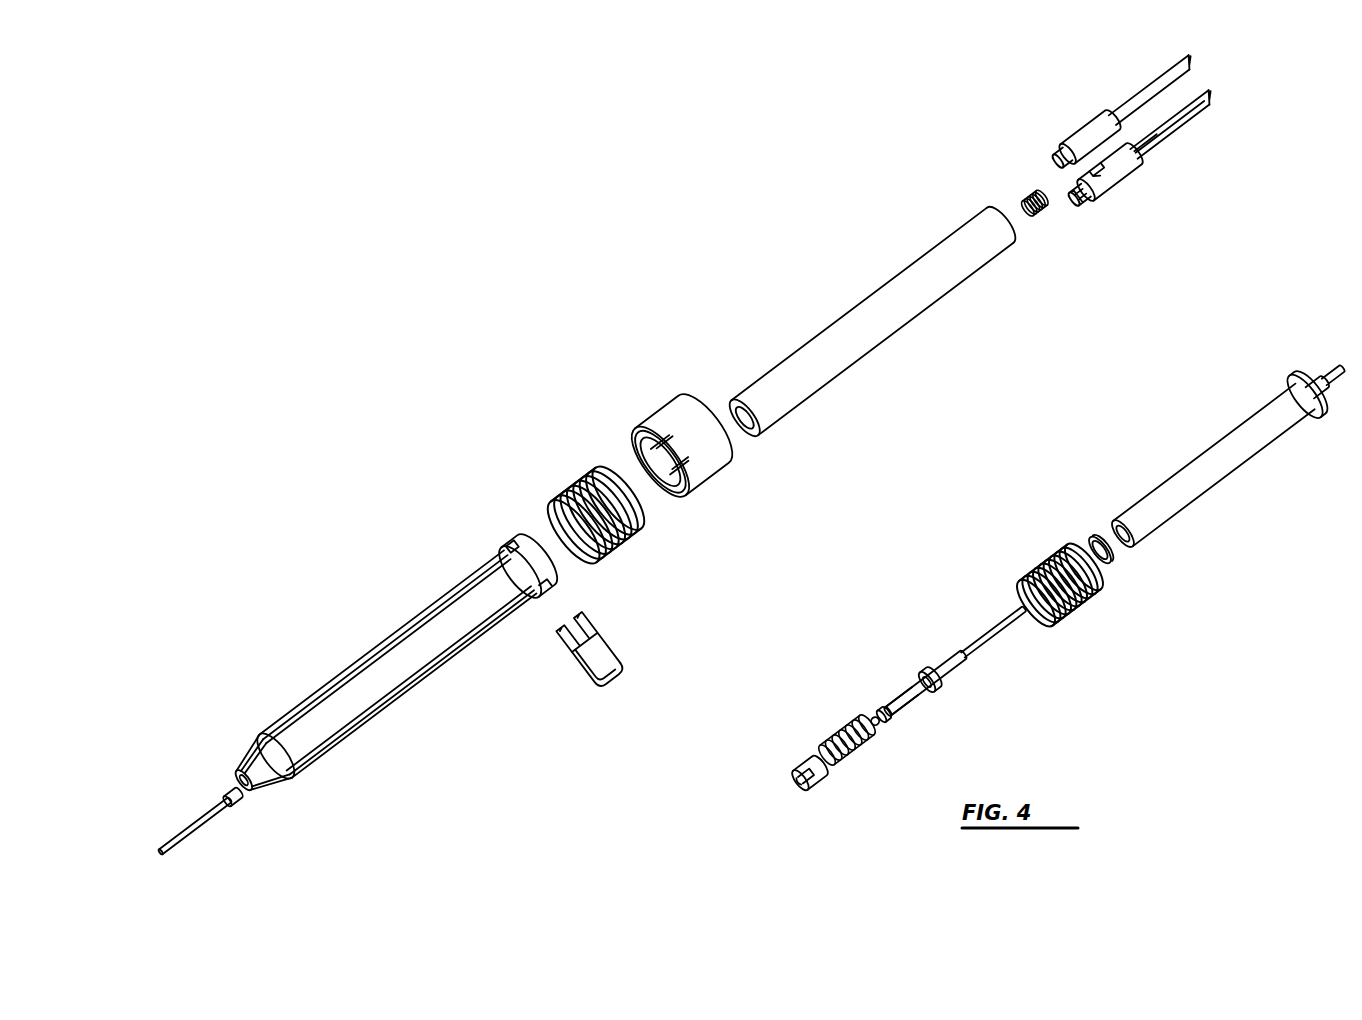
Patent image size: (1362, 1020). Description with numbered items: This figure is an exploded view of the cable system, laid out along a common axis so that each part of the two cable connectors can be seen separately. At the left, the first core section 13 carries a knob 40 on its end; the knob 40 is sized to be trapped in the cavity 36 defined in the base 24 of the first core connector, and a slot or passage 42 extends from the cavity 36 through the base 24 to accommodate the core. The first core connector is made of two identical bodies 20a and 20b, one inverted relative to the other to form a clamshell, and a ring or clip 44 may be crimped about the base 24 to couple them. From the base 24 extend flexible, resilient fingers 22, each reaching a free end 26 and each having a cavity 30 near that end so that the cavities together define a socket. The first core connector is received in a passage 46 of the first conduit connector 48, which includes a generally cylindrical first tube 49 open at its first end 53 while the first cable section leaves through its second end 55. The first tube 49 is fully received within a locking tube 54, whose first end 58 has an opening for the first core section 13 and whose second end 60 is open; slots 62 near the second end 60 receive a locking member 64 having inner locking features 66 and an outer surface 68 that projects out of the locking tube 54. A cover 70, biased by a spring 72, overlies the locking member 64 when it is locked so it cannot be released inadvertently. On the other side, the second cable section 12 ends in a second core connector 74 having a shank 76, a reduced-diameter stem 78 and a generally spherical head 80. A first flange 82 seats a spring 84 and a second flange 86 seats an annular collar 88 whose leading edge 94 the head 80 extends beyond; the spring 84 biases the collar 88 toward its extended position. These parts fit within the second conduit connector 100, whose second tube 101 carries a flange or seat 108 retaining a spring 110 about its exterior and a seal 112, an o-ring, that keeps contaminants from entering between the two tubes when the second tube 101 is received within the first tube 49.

The second cable section 12 is at (1327, 380).
The first core section 13 is at (195, 826).
The first core connector body 20a is at (1124, 111).
The first core connector body 20b is at (1143, 155).
The fingers 22 is at (1153, 90).
The base 24 is at (1085, 140).
The free end 26 is at (1189, 62).
The cavity 30 is at (1169, 125).
The cavity 36 is at (1097, 171).
The knob 40 is at (226, 792).
The slot or passage 42 is at (1079, 196).
The ring or clip 44 is at (1043, 206).
The passage 46 is at (872, 294).
The first conduit connector 48 is at (581, 438).
The first tube 49 is at (872, 322).
The first end 53 is at (999, 203).
The locking tube 54 is at (392, 668).
The second end 55 is at (744, 418).
The first end 58 is at (262, 766).
The second end 60 is at (528, 566).
The slots 62 is at (529, 566).
The locking member 64 is at (590, 690).
The locking features 66 is at (598, 661).
The outer surface 68 is at (594, 684).
The cover 70 is at (725, 488).
The spring 72 is at (641, 540).
The second core connector 74 is at (948, 679).
The shank 76 is at (955, 661).
The stem 78 is at (884, 714).
The head 80 is at (875, 721).
The first flange 82 is at (930, 680).
The spring 84 is at (857, 747).
The second flange 86 is at (901, 701).
The collar 88 is at (816, 794).
The leading end or edge 94 is at (818, 788).
The second conduit connector 100 is at (1230, 483).
The second tube 101 is at (1211, 467).
The flange or seat 108 is at (1307, 394).
The spring 110 is at (1038, 560).
The seal 112 is at (1092, 541).